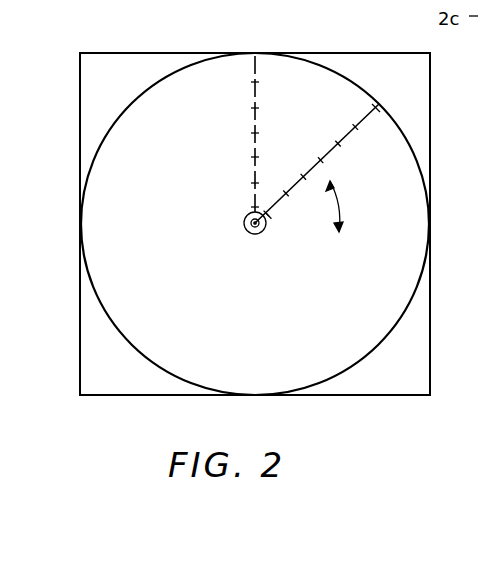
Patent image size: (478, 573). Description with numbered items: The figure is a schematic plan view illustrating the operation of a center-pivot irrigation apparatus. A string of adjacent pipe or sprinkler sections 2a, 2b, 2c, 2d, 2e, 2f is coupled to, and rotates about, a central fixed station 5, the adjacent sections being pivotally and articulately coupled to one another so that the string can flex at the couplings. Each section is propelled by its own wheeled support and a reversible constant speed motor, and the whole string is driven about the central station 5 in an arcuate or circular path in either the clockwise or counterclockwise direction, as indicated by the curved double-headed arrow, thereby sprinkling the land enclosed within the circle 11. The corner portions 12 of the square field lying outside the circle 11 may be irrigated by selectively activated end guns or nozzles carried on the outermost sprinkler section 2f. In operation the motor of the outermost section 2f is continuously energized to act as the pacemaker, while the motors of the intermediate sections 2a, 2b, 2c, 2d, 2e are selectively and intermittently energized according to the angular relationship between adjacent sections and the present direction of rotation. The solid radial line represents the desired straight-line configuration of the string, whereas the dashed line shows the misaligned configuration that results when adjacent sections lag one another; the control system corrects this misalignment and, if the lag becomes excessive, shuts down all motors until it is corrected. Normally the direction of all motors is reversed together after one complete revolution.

The sprinkler section 2a is at (253, 193).
The sprinkler section 2b is at (253, 167).
The sprinkler section 2c is at (253, 145).
The sprinkler section 2d is at (253, 118).
The sprinkler section 2e is at (253, 94).
The outermost sprinkler section 2f is at (253, 65).
The central fixed station 5 is at (244, 223).
The circle 11 is at (398, 322).
The corner portions 12 is at (120, 82).